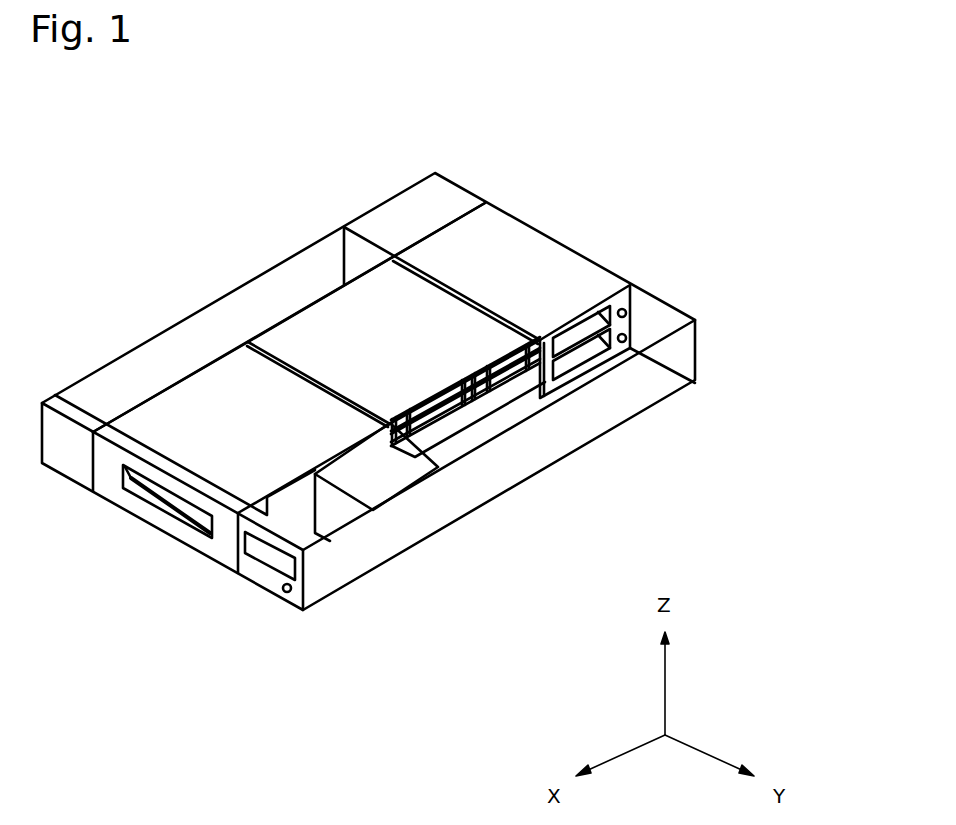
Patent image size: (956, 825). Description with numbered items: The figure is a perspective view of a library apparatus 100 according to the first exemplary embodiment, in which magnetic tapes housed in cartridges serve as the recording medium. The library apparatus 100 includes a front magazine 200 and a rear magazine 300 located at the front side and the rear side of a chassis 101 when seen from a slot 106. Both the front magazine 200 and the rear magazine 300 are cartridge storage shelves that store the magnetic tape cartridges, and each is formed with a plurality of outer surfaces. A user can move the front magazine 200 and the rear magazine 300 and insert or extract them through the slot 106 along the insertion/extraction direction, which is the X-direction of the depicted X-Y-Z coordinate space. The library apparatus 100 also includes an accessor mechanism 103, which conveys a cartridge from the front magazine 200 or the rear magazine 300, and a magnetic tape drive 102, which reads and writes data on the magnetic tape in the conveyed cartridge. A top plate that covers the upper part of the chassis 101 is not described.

The library apparatus 100 is at (520, 142).
The chassis 101 is at (355, 548).
The magnetic tape drive 102 is at (572, 270).
The accessor mechanism 103 is at (397, 478).
The slot 106 is at (185, 512).
The front magazine 200 is at (190, 392).
The rear magazine 300 is at (335, 300).